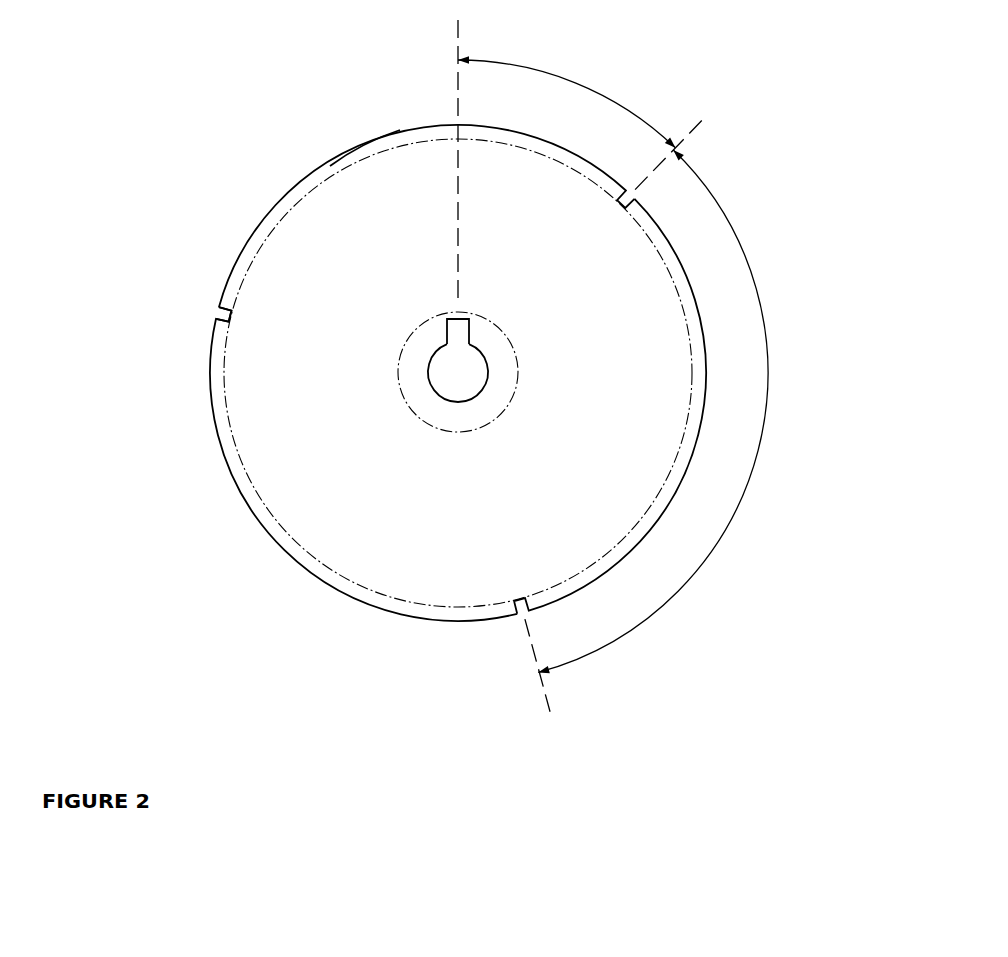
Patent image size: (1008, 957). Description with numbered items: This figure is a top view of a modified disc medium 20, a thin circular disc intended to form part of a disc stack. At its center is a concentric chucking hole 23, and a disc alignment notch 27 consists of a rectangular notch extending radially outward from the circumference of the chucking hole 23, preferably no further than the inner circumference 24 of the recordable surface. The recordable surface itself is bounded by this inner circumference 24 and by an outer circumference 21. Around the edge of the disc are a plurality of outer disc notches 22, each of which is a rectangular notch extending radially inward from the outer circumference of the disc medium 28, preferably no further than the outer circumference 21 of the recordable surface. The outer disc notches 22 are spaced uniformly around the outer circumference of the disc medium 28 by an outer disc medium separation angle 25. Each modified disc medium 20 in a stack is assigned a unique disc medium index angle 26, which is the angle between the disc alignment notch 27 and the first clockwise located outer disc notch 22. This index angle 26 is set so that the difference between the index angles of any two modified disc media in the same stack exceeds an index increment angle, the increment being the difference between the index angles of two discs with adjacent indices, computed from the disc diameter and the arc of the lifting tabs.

The modified disc medium 20 is at (440, 644).
The outer circumference of the recordable surface 21 is at (301, 186).
The outer disc notch 22 is at (217, 303).
The chucking hole 23 is at (424, 372).
The inner circumference of the recordable surface 24 is at (457, 436).
The outer disc medium separation angle 25 is at (760, 451).
The disc medium index angle 26 is at (582, 84).
The disc alignment notch 27 is at (451, 313).
The outer circumference of the disc medium 28 is at (363, 136).